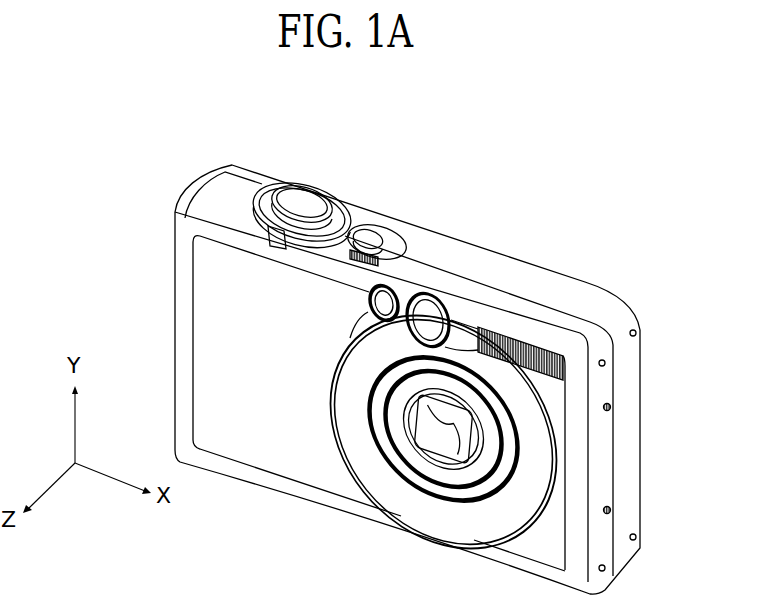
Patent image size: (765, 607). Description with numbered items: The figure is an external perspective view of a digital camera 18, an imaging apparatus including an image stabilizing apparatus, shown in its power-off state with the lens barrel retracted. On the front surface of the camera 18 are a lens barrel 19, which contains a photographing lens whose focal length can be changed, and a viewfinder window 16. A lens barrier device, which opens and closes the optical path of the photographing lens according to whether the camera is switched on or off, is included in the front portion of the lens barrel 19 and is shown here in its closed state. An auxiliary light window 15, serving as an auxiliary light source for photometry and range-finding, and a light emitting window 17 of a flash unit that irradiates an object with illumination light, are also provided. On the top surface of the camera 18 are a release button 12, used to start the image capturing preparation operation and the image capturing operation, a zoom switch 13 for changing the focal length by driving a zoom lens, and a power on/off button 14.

The release button 12 is at (303, 198).
The zoom switch 13 is at (340, 199).
The power on/off button 14 is at (370, 236).
The auxiliary light window 15 is at (386, 294).
The viewfinder window 16 is at (428, 312).
The light emitting window 17 is at (518, 337).
The digital camera 18 is at (267, 462).
The lens barrel 19 is at (438, 474).